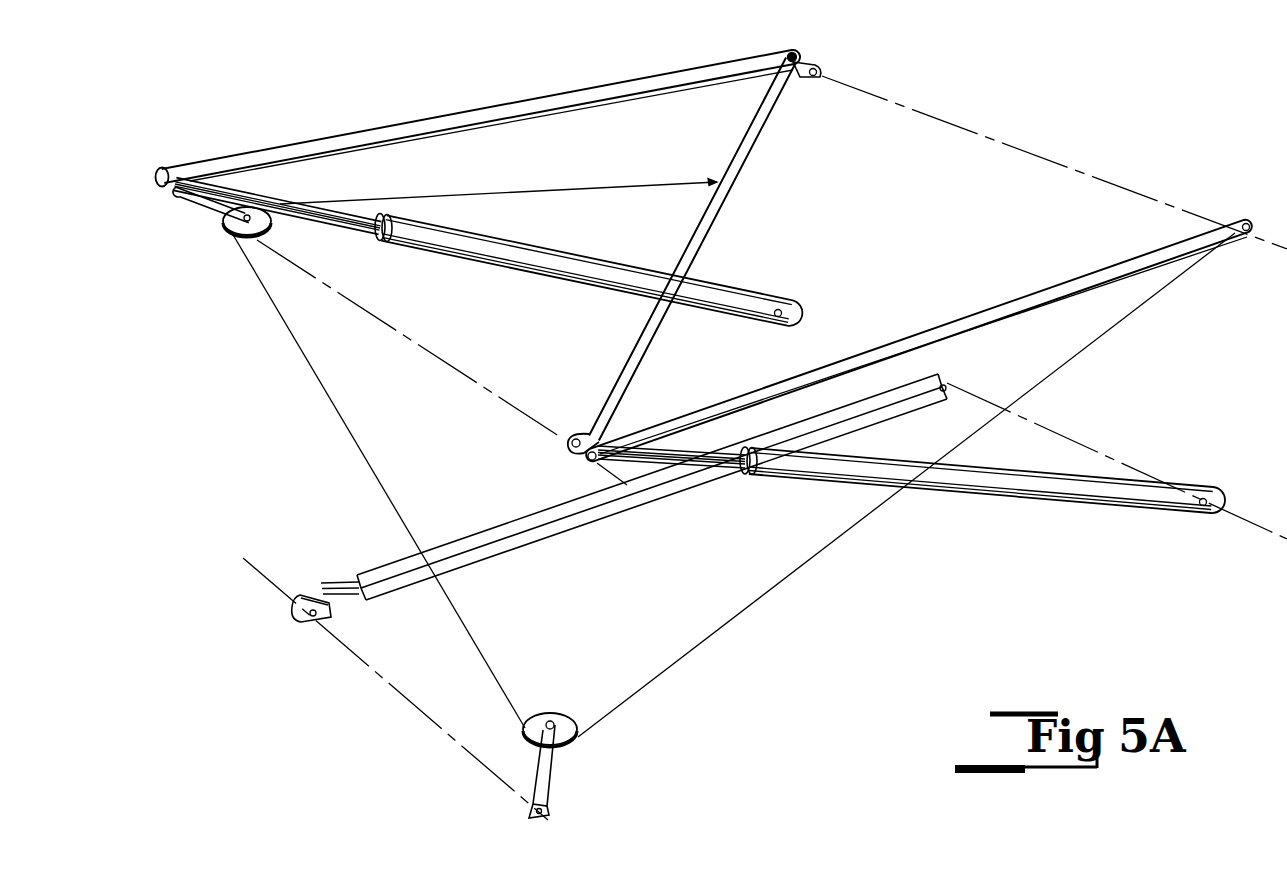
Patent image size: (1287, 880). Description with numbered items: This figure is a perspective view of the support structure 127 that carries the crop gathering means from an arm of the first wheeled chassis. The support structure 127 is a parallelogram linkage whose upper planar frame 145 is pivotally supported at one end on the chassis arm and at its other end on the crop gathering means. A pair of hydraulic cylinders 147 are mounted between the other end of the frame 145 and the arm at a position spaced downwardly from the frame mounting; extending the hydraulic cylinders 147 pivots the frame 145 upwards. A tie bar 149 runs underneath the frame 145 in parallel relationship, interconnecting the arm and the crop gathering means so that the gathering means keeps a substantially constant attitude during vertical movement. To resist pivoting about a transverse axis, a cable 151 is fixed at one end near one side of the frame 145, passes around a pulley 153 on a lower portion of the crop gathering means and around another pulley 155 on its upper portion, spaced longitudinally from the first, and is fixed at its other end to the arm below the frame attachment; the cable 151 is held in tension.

The support structure 127 is at (358, 118).
The upper planar frame 145 is at (572, 90).
The hydraulic cylinders 147 is at (523, 263).
The tie bar 149 is at (578, 517).
The cable 151 is at (805, 565).
The pulley 153 is at (565, 712).
The pulley 155 is at (268, 230).